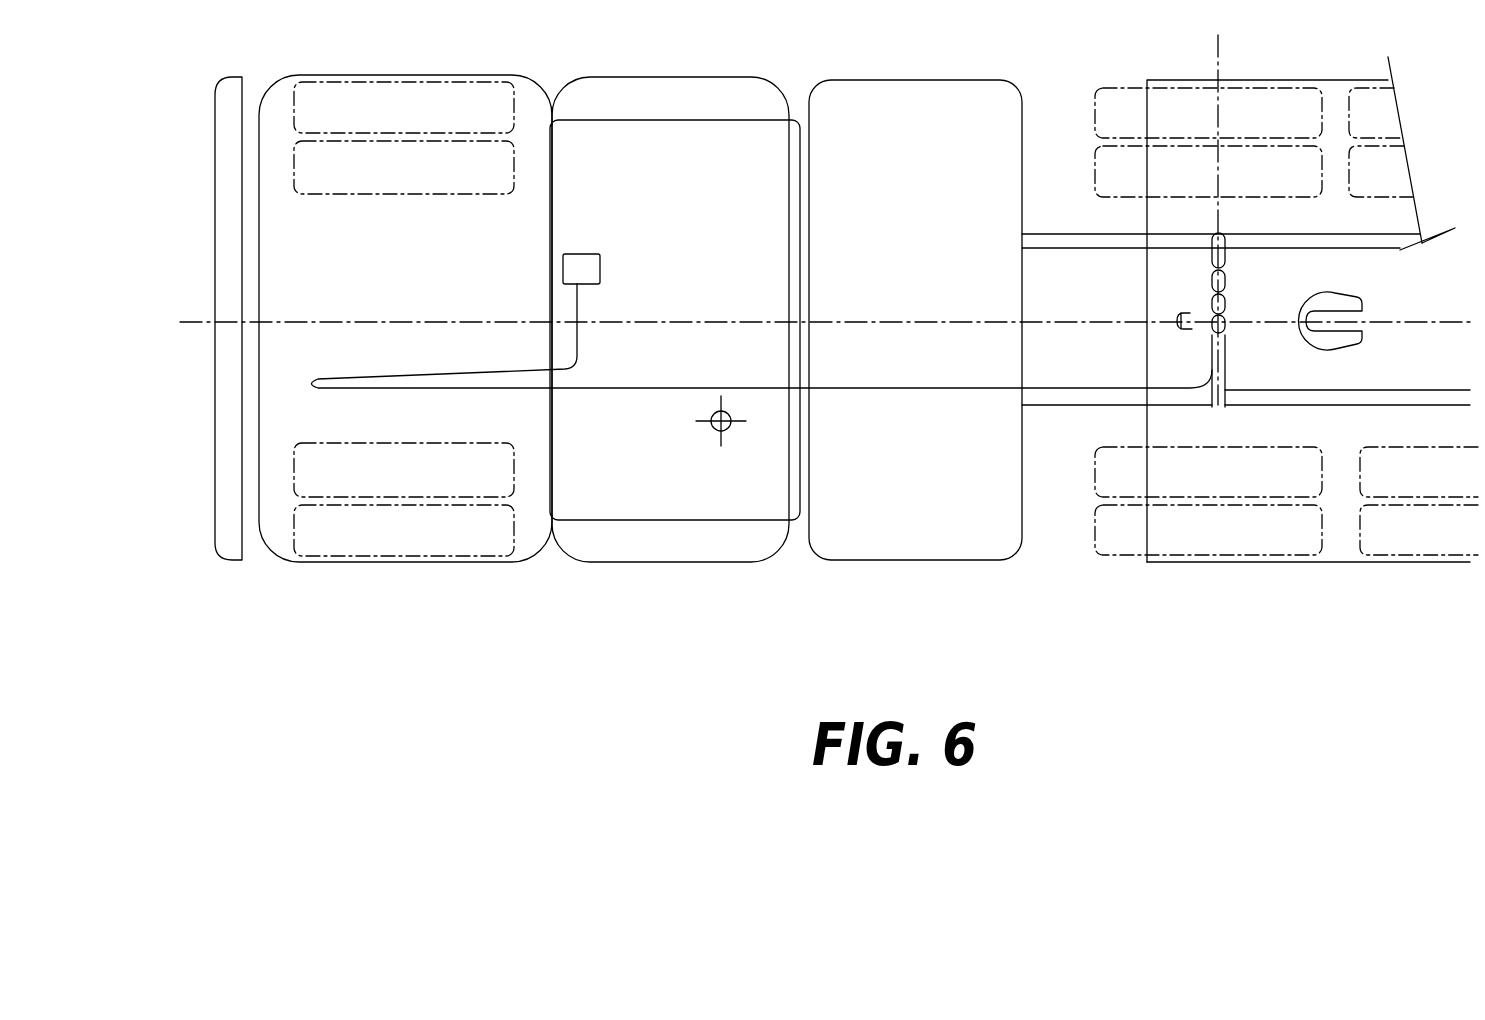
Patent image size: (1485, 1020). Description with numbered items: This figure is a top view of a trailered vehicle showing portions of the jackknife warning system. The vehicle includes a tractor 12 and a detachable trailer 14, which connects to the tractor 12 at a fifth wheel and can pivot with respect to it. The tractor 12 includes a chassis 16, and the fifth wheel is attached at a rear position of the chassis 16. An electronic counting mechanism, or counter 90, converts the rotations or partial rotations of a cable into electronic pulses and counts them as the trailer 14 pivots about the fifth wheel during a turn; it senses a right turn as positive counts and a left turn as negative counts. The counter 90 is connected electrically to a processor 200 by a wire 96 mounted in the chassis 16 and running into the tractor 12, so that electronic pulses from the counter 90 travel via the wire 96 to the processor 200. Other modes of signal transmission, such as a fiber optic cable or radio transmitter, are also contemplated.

The tractor 12 is at (636, 550).
The detachable trailer 14 is at (1185, 562).
The chassis 16 is at (730, 460).
The electronic counting mechanism 90 is at (1223, 326).
The wire 96 is at (455, 378).
The processor 200 is at (589, 274).